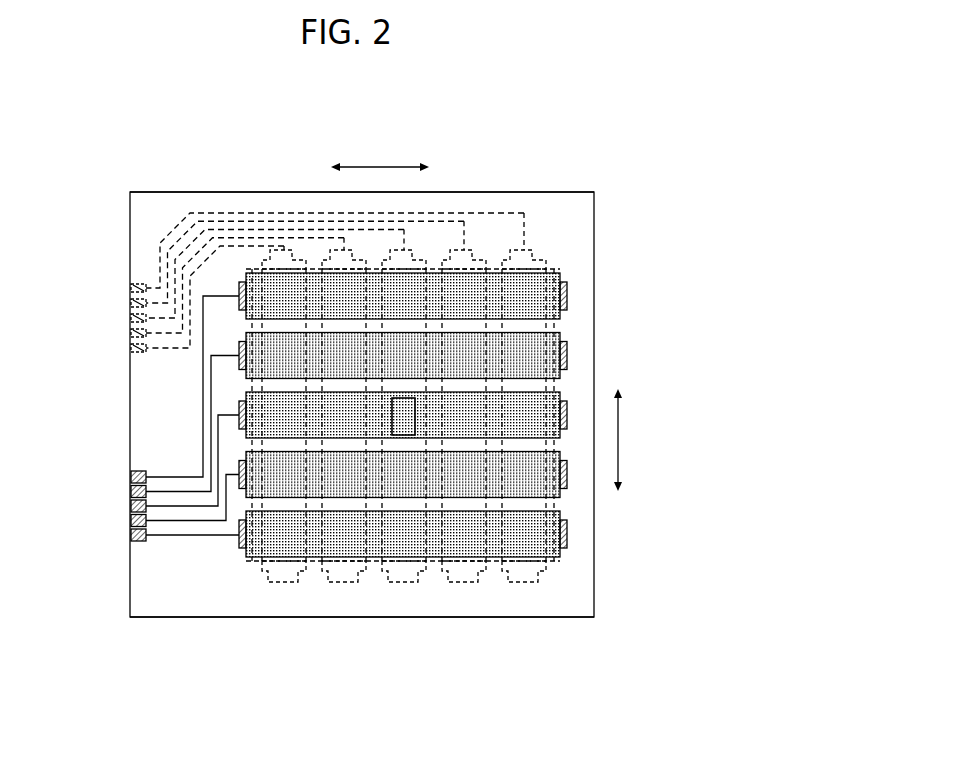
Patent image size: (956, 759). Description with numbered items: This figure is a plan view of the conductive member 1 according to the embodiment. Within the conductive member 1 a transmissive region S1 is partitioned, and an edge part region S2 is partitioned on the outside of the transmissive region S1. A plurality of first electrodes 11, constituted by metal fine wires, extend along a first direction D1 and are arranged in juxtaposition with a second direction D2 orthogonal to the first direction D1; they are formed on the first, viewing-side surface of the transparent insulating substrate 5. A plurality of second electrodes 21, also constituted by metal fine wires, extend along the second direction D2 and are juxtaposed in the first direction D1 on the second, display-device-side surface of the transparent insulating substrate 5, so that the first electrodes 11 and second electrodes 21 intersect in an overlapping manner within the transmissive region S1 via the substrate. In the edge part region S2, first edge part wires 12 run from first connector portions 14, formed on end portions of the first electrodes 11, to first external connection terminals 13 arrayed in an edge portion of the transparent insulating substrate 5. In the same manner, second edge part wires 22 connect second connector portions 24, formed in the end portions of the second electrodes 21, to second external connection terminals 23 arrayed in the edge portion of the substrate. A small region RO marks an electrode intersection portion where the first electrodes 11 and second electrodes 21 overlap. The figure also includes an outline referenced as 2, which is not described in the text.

The conductive member 1 is at (146, 181).
The substrate 2 is at (596, 574).
The transparent insulating substrate 5 is at (277, 619).
The first electrode 11 is at (563, 314).
The first edge part wire 12 is at (203, 431).
The first external connection terminal 13 is at (131, 478).
The first connector portion 14 is at (240, 290).
The second electrode 21 is at (543, 263).
The second edge part wire 22 is at (237, 212).
The second external connection terminal 23 is at (131, 288).
The second connector portion 24 is at (530, 250).
The region RO is at (418, 414).
The transmissive region S1 is at (552, 267).
The edge part region S2 is at (585, 215).
The first direction D1 is at (380, 154).
The second direction D2 is at (636, 440).